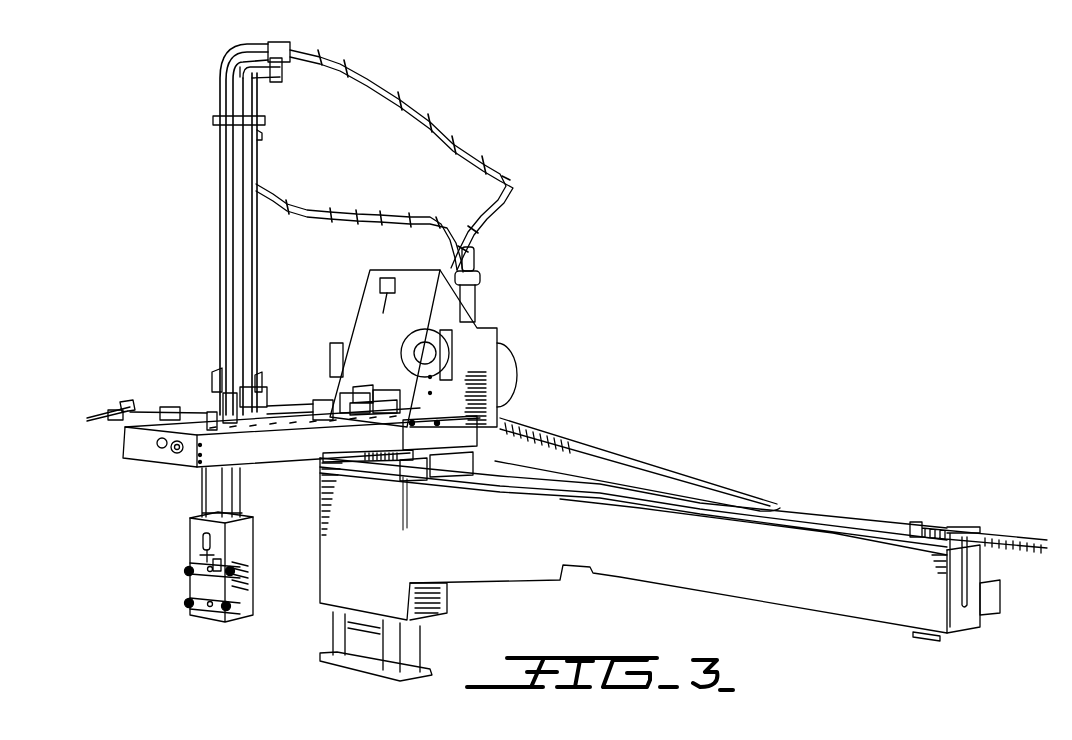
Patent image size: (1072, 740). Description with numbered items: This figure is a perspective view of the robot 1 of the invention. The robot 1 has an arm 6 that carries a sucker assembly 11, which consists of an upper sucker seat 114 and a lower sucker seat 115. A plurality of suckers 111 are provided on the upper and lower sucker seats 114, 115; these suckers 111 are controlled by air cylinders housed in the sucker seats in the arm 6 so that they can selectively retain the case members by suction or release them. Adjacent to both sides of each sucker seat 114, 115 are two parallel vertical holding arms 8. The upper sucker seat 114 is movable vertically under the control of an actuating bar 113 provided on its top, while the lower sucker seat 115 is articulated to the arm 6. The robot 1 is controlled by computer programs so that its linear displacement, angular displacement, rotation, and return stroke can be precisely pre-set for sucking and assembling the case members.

The robot 1 is at (194, 301).
The arm 6 is at (232, 613).
The holding arms 8 is at (186, 568).
The sucker assembly 11 is at (161, 598).
The suckers 111 is at (191, 553).
The actuating bar 113 is at (193, 543).
The upper sucker seat 114 is at (222, 560).
The lower sucker seat 115 is at (205, 613).